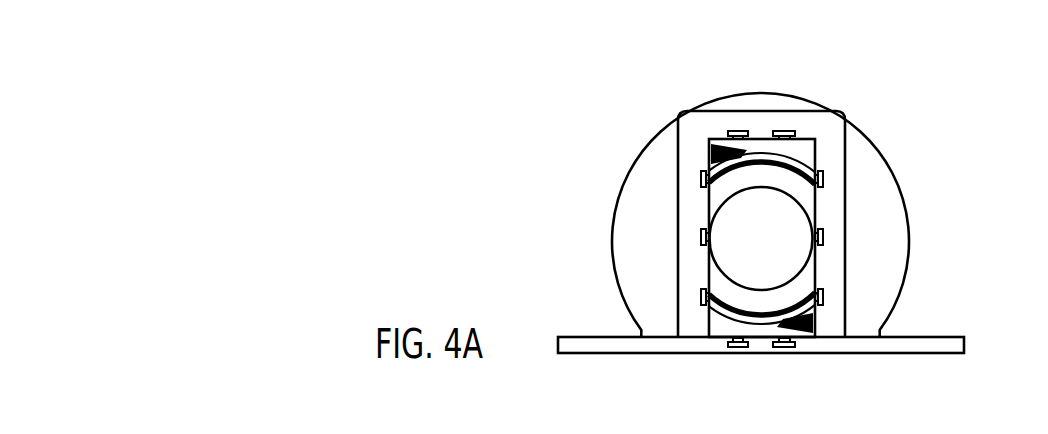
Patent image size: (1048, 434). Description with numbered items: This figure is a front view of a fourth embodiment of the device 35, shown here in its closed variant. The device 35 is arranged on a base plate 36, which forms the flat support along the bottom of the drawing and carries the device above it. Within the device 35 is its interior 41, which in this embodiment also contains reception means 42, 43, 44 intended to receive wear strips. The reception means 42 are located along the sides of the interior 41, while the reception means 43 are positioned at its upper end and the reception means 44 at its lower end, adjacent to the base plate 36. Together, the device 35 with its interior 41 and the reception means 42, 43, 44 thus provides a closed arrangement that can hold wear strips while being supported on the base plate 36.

The device 35 is at (929, 99).
The base plate 36 is at (965, 345).
The interior 41 is at (816, 157).
The reception means 42 is at (701, 181).
The reception means 43 is at (737, 131).
The reception means 44 is at (738, 348).